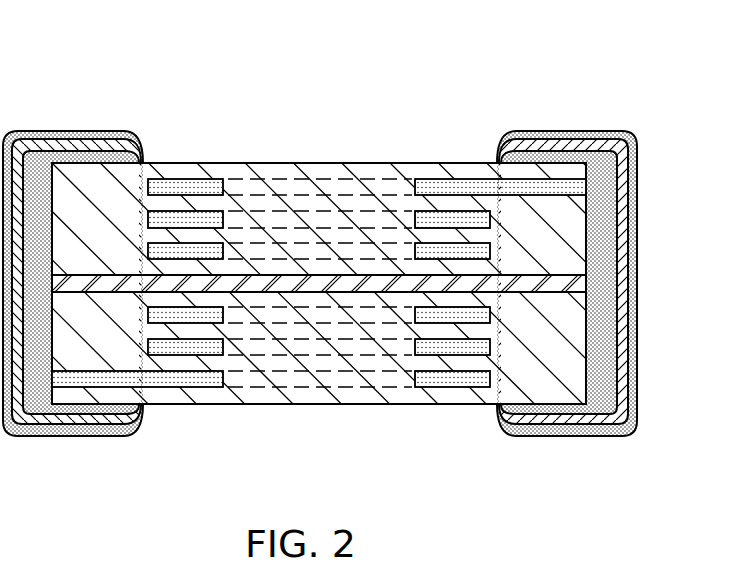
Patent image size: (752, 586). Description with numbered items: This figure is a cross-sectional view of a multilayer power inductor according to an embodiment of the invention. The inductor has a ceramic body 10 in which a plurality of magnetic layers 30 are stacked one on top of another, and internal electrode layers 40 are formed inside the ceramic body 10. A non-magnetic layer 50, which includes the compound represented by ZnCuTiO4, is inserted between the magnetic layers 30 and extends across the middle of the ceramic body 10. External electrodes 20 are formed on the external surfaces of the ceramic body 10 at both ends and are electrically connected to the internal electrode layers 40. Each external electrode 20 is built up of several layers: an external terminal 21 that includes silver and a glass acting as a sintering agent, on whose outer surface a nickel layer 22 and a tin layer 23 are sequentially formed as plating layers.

The ceramic body 10 is at (311, 163).
The external electrode 20 is at (320, 231).
The external terminal 21 is at (43, 73).
The nickel (Ni) layer 22 is at (75, 148).
The tin (Sn) layer 23 is at (32, 137).
The magnetic layer 30 is at (430, 171).
The internal electrode layer 40 is at (183, 178).
The non-magnetic layer 50 is at (583, 283).